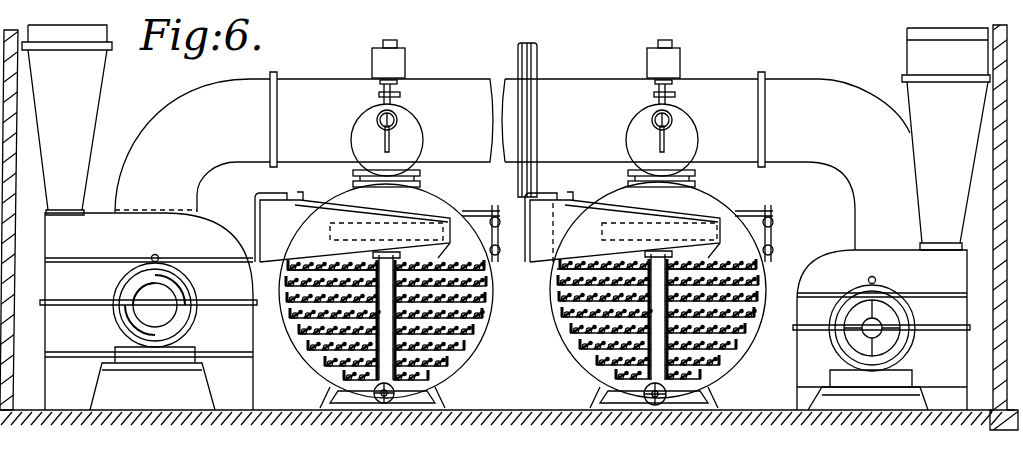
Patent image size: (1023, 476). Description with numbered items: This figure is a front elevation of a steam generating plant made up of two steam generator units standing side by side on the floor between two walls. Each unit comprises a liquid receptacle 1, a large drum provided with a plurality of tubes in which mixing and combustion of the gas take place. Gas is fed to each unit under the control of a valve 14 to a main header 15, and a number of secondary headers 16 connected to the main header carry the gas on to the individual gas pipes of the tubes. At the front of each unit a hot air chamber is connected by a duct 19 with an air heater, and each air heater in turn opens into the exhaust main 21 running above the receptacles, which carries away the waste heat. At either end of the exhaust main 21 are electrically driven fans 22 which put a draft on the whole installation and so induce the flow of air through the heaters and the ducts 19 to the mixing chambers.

The liquid receptacle 1 is at (526, 316).
The valve 14 is at (382, 403).
The main header 15 is at (402, 256).
The secondary headers 16 is at (456, 362).
The duct 19 is at (487, 227).
The exhaust main 21 is at (545, 118).
The electrically driven fans 22 is at (155, 308).